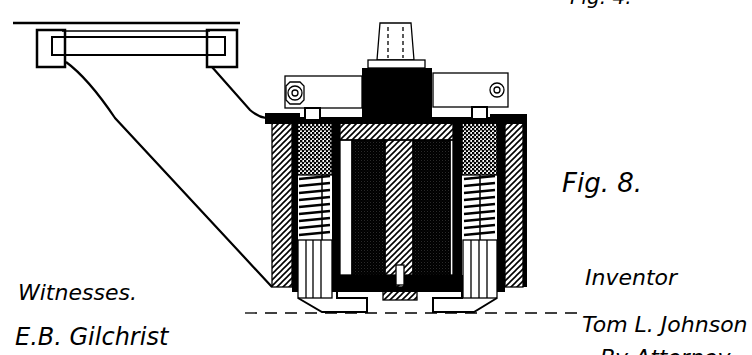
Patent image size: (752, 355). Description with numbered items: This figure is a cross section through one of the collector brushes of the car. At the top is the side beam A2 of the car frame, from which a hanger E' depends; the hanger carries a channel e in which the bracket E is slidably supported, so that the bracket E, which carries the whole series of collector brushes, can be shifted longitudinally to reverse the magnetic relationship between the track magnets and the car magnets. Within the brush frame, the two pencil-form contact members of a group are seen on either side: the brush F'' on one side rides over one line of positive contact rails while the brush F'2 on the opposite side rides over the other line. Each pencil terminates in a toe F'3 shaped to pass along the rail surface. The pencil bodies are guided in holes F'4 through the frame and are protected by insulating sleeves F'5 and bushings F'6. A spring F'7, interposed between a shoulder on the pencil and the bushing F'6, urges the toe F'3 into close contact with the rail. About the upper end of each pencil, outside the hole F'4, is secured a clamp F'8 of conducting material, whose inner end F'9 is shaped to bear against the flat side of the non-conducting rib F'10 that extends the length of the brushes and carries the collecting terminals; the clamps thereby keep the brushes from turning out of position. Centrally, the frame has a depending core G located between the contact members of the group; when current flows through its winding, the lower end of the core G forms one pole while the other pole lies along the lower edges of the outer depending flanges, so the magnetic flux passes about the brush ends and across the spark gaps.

The side beam A2 is at (152, 22).
The hanger E' is at (239, 48).
The channel e is at (226, 56).
The bracket E is at (154, 158).
The non-conducting rib F'10 is at (422, 41).
The inner end of clamp F'9 is at (422, 62).
The bushing F'6 is at (418, 177).
The clamp F'8 is at (396, 90).
The brush F'2 is at (308, 83).
The brush F'' is at (508, 104).
The hole F'4 is at (421, 204).
The core G is at (292, 201).
The spring F'7 is at (401, 209).
The insulating sleeve F'5 is at (432, 269).
The toe F'3 is at (412, 319).